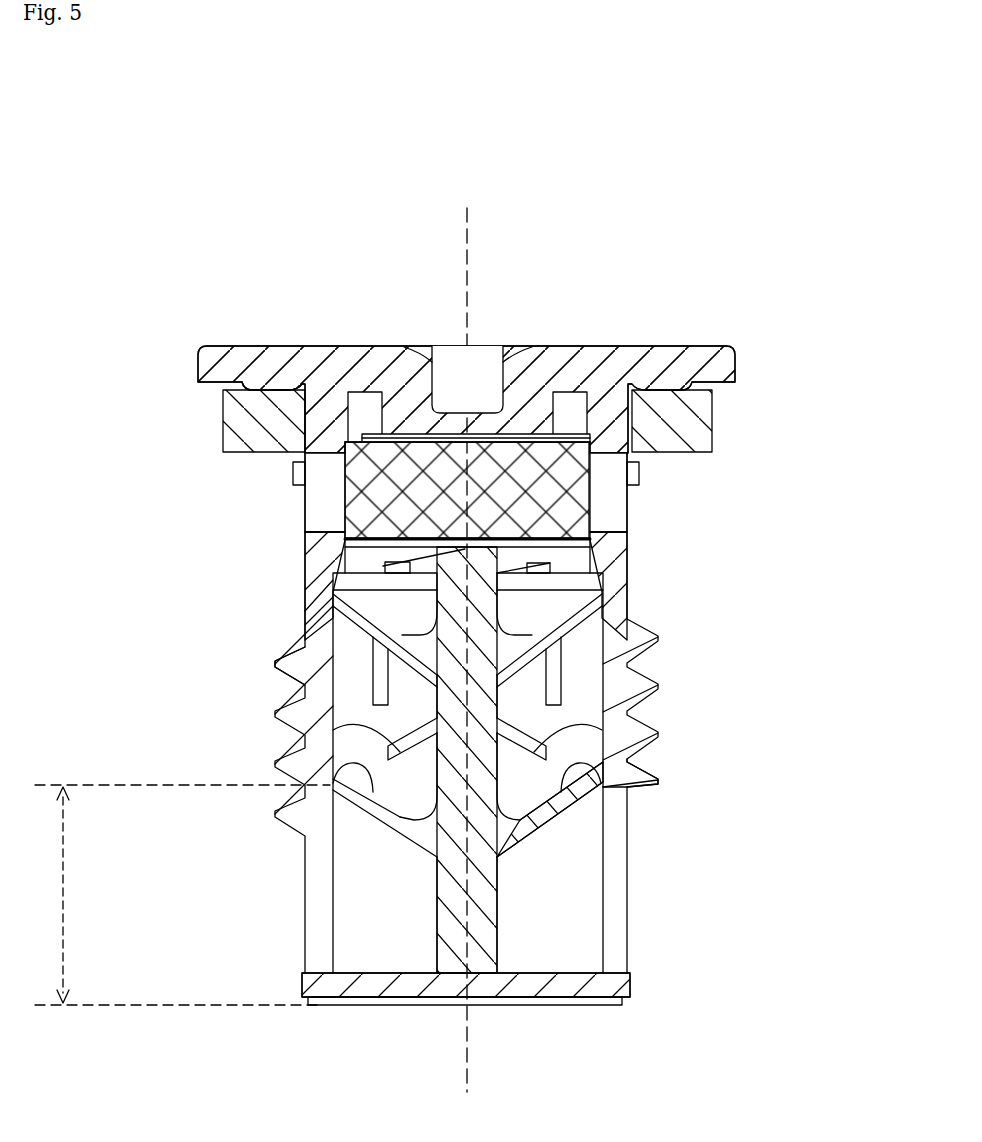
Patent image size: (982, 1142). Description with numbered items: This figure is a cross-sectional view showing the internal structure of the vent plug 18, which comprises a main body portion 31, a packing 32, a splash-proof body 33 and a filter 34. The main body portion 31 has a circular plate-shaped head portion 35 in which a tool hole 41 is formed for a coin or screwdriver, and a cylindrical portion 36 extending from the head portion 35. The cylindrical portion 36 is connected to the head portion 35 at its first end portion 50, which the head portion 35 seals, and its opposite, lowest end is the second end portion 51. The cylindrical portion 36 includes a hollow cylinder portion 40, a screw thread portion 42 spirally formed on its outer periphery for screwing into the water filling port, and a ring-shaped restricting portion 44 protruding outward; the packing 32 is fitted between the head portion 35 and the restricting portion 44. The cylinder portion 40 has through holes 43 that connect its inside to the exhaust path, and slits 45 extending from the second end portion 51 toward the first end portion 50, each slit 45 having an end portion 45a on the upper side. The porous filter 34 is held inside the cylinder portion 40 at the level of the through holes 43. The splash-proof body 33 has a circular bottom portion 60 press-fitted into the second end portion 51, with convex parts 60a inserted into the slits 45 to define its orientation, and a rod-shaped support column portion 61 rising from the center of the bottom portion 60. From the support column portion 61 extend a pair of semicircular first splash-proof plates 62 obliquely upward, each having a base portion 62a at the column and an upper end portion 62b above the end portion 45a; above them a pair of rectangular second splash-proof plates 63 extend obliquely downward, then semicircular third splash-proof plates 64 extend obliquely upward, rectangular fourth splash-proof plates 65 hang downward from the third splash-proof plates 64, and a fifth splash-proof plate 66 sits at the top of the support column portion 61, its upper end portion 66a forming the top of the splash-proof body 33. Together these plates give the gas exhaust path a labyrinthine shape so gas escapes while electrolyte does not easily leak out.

The vent plug 18 is at (727, 225).
The main body portion 31 is at (738, 344).
The packing 32 is at (712, 418).
The splash-proof body 33 is at (505, 884).
The filter 34 is at (524, 463).
The head portion 35 is at (222, 346).
The cylindrical portion 36 is at (308, 560).
The cylinder portion 40 is at (628, 537).
The tool hole 41 is at (500, 358).
The screw thread portion 42 is at (274, 660).
The through hole 43 is at (627, 505).
The restricting portion 44 is at (293, 472).
The slit 45 is at (606, 904).
The end portion of slit 45a is at (305, 825).
The first end portion 50 is at (300, 390).
The second end portion 51 is at (581, 1005).
The bottom portion 60 is at (395, 992).
The convex part 60a is at (303, 985).
The support column portion 61 is at (447, 933).
The first splash-proof plate 62 is at (305, 782).
The base portion 62a is at (434, 868).
The upper end portion 62b is at (640, 791).
The second splash-proof plate 63 is at (305, 740).
The third splash-proof plate 64 is at (312, 623).
The fourth splash-proof plate 65 is at (373, 667).
The fifth splash-proof plate 66 is at (628, 568).
The upper end portion of fifth splash-proof plate 66a is at (460, 530).